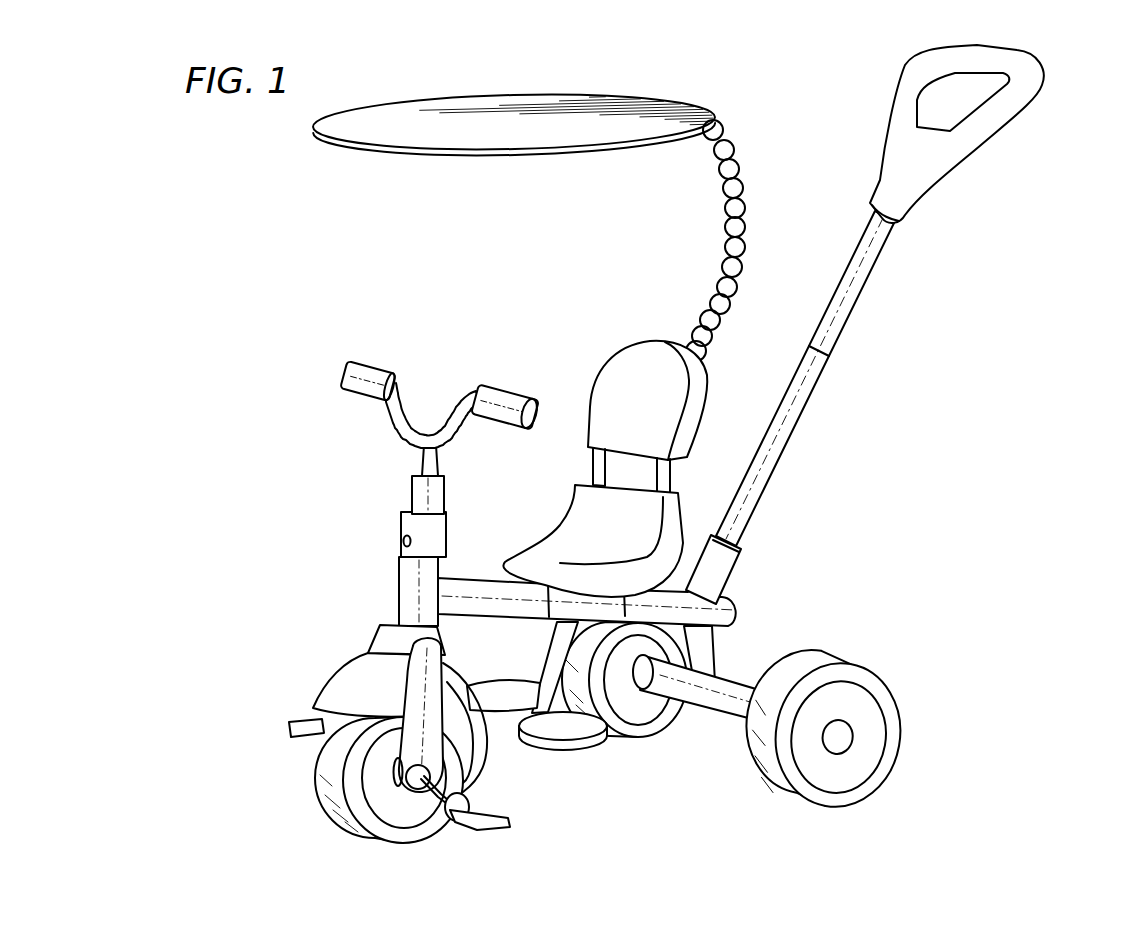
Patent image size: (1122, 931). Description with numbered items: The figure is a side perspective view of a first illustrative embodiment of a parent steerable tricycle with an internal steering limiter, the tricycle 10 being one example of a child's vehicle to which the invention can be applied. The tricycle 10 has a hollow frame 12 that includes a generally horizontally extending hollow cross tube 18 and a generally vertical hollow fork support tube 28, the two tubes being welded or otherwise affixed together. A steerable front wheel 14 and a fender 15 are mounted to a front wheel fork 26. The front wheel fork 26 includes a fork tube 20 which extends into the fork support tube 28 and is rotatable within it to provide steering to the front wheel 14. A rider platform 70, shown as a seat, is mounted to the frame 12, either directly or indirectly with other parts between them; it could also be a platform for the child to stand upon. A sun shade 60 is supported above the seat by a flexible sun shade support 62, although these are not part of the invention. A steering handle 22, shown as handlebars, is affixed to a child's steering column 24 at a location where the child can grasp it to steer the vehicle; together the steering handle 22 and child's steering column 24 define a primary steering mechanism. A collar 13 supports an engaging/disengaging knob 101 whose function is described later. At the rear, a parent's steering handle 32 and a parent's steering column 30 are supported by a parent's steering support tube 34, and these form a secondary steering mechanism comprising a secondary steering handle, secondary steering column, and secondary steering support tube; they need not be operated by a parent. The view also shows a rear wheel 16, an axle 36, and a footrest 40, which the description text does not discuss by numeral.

The tricycle 10 is at (266, 369).
The hollow frame 12 is at (457, 563).
The collar 13 is at (400, 523).
The steerable front wheel 14 is at (330, 757).
The fender 15 is at (350, 682).
The rear wheel 16 is at (624, 679).
The hollow cross tube 18 is at (487, 577).
The fork tube 20 is at (823, 728).
The steering handle 22 is at (377, 365).
The child's steering column 24 is at (420, 458).
The front wheel fork 26 is at (478, 762).
The fork support tube 28 is at (400, 587).
The parent's steering column 30 is at (866, 283).
The parent's steering handle 32 is at (985, 46).
The parent's steering support tube 34 is at (742, 565).
The rear axle 36 is at (699, 673).
The footrest 40 is at (537, 686).
The sun shade 60 is at (636, 100).
The flexible sun shade support 62 is at (745, 231).
The rider platform 70 is at (566, 530).
The engaging/disengaging knob 101 is at (400, 540).